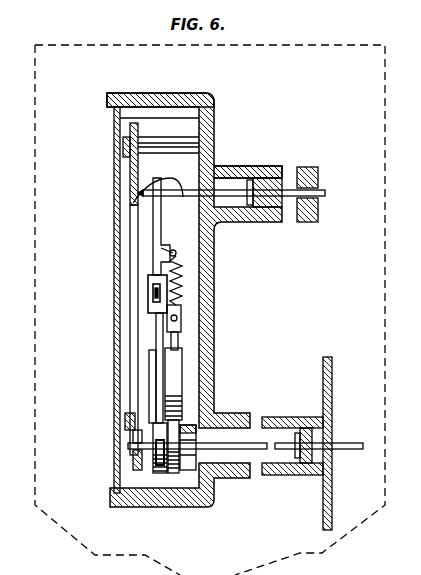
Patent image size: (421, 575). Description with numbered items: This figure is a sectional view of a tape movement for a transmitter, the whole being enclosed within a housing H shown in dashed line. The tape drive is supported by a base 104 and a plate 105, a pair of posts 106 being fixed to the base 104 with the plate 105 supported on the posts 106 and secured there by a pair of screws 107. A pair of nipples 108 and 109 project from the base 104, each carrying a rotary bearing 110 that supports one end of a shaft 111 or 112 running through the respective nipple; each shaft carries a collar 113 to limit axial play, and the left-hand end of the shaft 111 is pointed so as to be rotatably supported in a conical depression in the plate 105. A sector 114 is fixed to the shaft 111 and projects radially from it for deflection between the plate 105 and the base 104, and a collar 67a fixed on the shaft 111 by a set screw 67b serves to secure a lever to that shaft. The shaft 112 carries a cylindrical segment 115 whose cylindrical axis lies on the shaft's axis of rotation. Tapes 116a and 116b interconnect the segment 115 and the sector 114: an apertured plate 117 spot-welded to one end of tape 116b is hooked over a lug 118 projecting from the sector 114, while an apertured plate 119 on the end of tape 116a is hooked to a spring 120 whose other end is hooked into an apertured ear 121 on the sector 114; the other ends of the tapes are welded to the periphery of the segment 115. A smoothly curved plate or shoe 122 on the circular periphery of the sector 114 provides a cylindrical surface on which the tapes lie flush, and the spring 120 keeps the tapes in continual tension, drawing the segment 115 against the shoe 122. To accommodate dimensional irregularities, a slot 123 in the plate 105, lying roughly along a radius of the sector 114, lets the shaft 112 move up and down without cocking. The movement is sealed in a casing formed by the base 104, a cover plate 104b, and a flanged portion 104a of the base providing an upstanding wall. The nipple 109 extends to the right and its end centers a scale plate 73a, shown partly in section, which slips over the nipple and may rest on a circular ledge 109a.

The housing H is at (305, 47).
The base 104 is at (214, 243).
The flanged portion 104a is at (133, 93).
The cover plate 104b is at (121, 118).
The plate 105 is at (137, 260).
The posts 106 is at (131, 163).
The screws 107 is at (122, 147).
The nipple 108 is at (265, 166).
The nipple 109 is at (243, 478).
The circular ledge 109a is at (328, 423).
The rotary bearing 110 is at (287, 178).
The shaft 111 is at (128, 181).
The shaft 112 is at (363, 440).
The collar 113 is at (230, 166).
The sector 114 is at (158, 218).
The cylindrical segment 115 is at (190, 470).
The tape 116a is at (174, 473).
The tape 116b is at (158, 473).
The apertured plate 117 is at (150, 311).
The lug 118 is at (152, 287).
The apertured plate 119 is at (183, 314).
The spring 120 is at (183, 281).
The apertured ear 121 is at (173, 250).
The plate or shoe 122 is at (150, 390).
The slot 123 is at (125, 447).
The collar 67a is at (318, 180).
The set screw 67b is at (312, 222).
The scale plate 73a is at (333, 375).